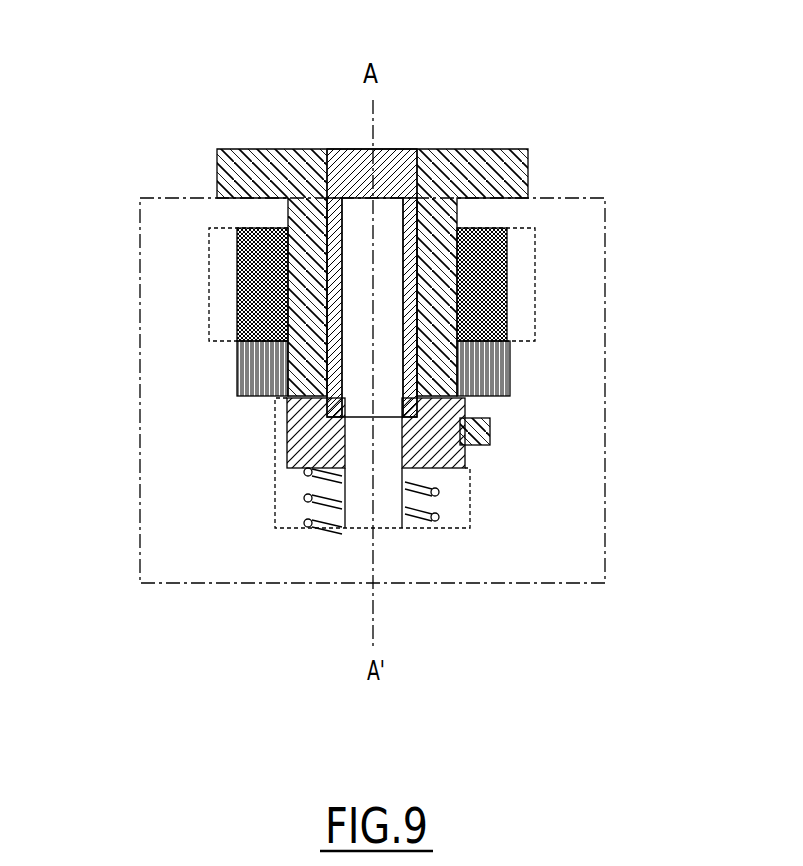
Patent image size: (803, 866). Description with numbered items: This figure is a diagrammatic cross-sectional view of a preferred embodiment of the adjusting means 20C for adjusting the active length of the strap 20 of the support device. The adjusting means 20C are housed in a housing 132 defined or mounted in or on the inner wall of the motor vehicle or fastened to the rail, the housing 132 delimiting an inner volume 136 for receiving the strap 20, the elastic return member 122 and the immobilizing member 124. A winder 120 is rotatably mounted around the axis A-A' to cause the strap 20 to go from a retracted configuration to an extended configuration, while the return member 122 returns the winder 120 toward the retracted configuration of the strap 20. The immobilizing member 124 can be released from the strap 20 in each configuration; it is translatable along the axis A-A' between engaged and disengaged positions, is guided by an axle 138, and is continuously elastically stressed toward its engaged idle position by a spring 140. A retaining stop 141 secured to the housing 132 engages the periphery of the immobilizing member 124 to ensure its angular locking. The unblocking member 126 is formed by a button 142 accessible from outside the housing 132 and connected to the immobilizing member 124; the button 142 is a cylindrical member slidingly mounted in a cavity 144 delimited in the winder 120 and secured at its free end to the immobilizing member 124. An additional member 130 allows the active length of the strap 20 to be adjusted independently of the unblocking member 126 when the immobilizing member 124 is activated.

The adjusting means 20C is at (553, 102).
The housing 132 is at (606, 238).
The additional member 130 is at (266, 142).
The unblocking member 126 is at (390, 146).
The button 142 is at (350, 150).
The cavity 144 is at (412, 150).
The inner volume 136 is at (216, 300).
The winder 120 is at (272, 212).
The strap 20 is at (512, 292).
The elastic return member 122 is at (522, 370).
The immobilizing member 124 is at (262, 432).
The retaining stop 141 is at (492, 432).
The axle 138 is at (360, 510).
The spring 140 is at (439, 492).